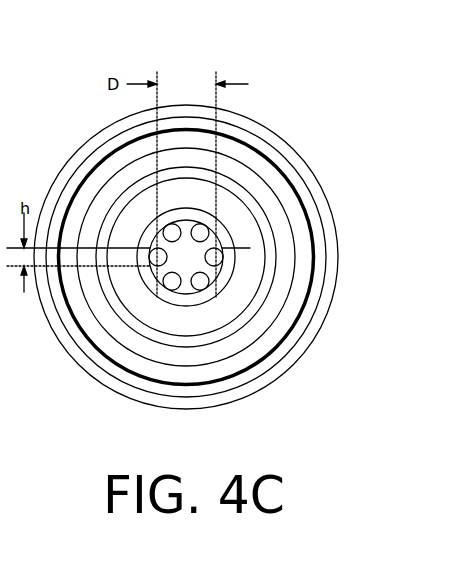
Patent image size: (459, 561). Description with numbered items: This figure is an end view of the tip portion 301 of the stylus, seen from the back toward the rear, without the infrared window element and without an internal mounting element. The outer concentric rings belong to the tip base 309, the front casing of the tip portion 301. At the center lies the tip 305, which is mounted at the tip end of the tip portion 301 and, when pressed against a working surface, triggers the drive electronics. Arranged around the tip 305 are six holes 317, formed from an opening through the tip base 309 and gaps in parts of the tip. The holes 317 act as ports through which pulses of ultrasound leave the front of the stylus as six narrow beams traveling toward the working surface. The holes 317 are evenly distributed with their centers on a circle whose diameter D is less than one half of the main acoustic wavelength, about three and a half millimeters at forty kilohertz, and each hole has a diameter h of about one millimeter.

The tip portion 301 is at (280, 110).
The tip base 309 is at (73, 152).
The tip 305 is at (200, 267).
The holes 317 is at (170, 292).